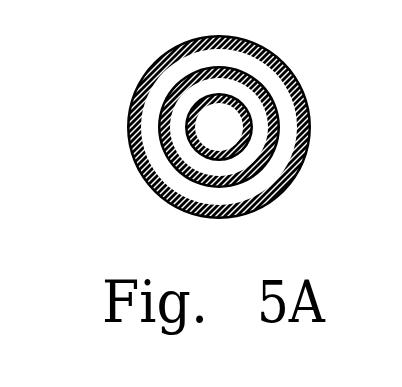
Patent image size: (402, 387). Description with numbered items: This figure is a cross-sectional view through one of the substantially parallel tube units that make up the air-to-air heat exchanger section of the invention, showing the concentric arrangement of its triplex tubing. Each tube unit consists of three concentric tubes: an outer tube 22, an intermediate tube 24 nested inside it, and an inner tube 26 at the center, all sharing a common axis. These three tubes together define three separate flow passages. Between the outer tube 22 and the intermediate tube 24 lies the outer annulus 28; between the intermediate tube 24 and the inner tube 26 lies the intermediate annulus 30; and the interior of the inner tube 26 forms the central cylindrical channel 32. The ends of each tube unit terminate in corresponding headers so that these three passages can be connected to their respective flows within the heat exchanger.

The outer tube 22 is at (276, 61).
The intermediate tube 24 is at (262, 84).
The inner tube 26 is at (252, 123).
The outer annulus 28 is at (177, 192).
The intermediate annulus 30 is at (177, 142).
The central cylindrical channel 32 is at (218, 127).